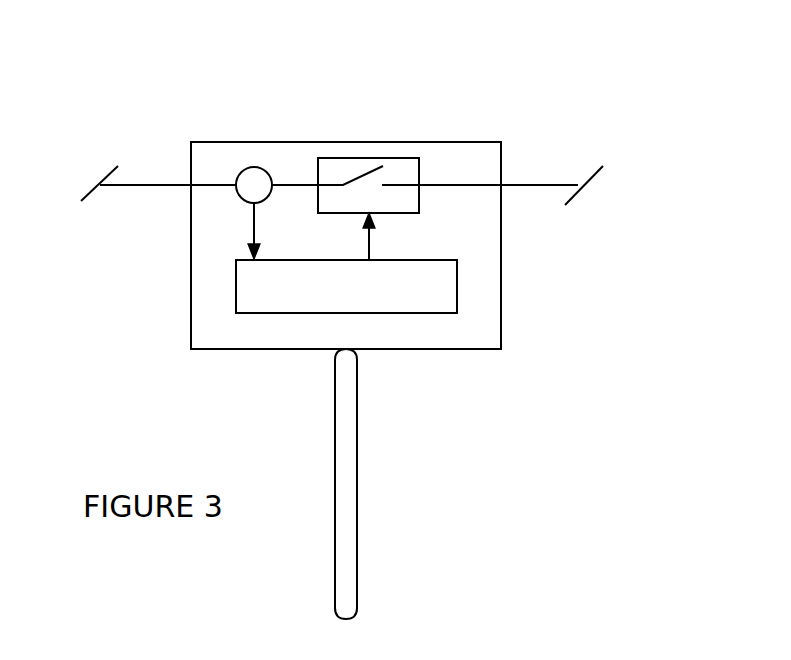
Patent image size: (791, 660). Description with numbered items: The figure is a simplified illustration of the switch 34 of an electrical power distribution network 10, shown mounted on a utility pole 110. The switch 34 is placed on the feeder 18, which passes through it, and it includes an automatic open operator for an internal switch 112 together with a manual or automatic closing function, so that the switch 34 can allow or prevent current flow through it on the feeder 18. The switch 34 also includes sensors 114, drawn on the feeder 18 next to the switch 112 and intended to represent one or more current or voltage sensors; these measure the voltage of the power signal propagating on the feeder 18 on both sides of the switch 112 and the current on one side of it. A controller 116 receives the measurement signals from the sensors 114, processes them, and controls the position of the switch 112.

The system 10 is at (202, 112).
The feeder 18 is at (151, 186).
The switch 34 is at (503, 247).
The utility pole 110 is at (357, 483).
The switch 112 is at (368, 157).
The sensors 114 is at (256, 166).
The controller 116 is at (236, 285).